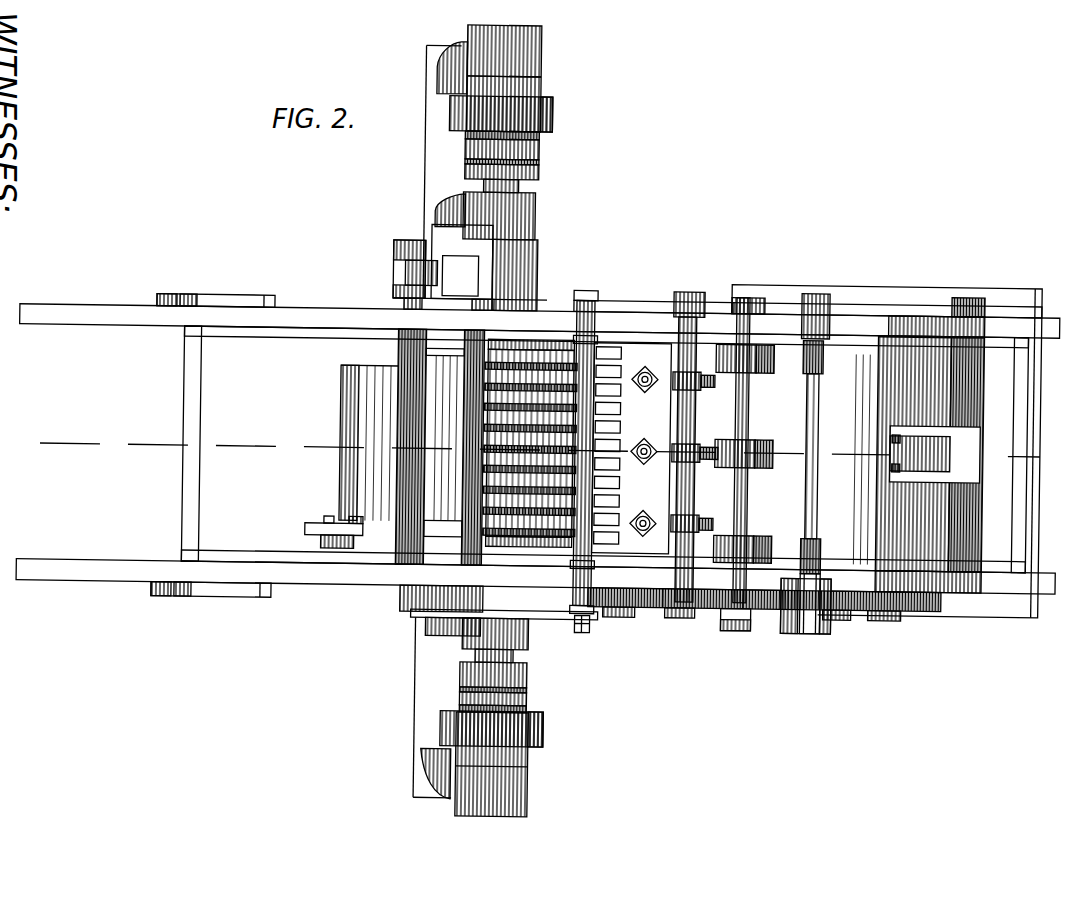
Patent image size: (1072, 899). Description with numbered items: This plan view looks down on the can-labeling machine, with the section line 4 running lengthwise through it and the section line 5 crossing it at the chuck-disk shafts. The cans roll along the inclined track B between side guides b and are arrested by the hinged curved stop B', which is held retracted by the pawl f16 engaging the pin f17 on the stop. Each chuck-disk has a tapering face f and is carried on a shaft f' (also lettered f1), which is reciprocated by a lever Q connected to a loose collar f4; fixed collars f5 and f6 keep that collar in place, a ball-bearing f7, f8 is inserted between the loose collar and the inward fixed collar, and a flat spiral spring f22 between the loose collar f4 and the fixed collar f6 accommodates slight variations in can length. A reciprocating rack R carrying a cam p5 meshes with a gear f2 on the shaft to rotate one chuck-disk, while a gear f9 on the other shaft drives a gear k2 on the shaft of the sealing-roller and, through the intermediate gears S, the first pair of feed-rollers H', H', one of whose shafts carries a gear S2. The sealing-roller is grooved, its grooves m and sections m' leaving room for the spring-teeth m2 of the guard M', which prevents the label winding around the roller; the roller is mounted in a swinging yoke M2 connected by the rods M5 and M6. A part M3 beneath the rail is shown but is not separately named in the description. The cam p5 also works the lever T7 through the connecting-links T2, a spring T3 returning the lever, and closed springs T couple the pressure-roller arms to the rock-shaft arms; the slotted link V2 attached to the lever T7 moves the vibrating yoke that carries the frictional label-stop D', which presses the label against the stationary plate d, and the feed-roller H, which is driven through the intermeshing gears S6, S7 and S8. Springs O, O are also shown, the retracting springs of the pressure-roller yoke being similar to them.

The section line 5 5 is at (498, 410).
The section line 4 4 is at (535, 454).
The fixed collar f5 is at (538, 78).
The loose collar f4 is at (537, 105).
The lever Q is at (546, 117).
The flat spiral spring f22 is at (470, 137).
The tapering face f is at (527, 143).
The ball-bearing f7 is at (537, 158).
The fixed collar f6 is at (537, 173).
The chuck-disk shaft f1 is at (517, 189).
The gear f2 is at (518, 267).
The chuck-disk shaft f' is at (468, 659).
The ball-bearing f8 is at (460, 696).
The gear f9 is at (423, 600).
The pawl f16 is at (310, 524).
The pin f17 is at (357, 514).
The swinging yoke or frame M2 is at (551, 297).
The block M3 is at (467, 611).
The cross-bar or rod M5 is at (473, 392).
The cross-bar or rod M6 is at (640, 442).
The guard M' is at (632, 448).
The groove m is at (506, 443).
The section m' is at (458, 442).
The spring-teeth m2 is at (588, 397).
The cam p5 is at (420, 263).
The rack R is at (460, 276).
The connecting-link T2 is at (607, 300).
The closed spring T is at (709, 384).
The spring T3 is at (696, 458).
The lever T7 is at (691, 296).
The link V2 is at (864, 305).
The inclined track or way B is at (604, 449).
The stop B' is at (368, 443).
The side guide b is at (323, 333).
The spring O is at (824, 358).
The feed-roller H' is at (750, 450).
The feed-roller H is at (945, 472).
The stationary plate d is at (834, 504).
The frictional stop D' is at (932, 434).
The gear k2 is at (578, 633).
The intermediate gear S is at (628, 610).
The gear S2 is at (728, 622).
The gear S6 is at (786, 608).
The gear S7 is at (855, 618).
The gear S8 is at (920, 610).